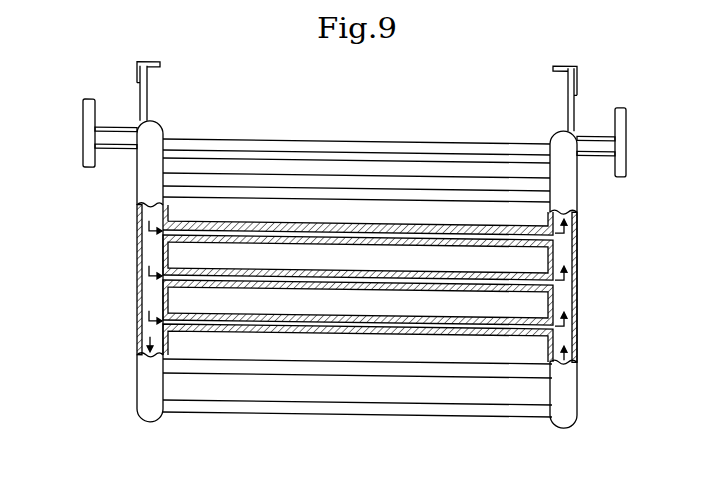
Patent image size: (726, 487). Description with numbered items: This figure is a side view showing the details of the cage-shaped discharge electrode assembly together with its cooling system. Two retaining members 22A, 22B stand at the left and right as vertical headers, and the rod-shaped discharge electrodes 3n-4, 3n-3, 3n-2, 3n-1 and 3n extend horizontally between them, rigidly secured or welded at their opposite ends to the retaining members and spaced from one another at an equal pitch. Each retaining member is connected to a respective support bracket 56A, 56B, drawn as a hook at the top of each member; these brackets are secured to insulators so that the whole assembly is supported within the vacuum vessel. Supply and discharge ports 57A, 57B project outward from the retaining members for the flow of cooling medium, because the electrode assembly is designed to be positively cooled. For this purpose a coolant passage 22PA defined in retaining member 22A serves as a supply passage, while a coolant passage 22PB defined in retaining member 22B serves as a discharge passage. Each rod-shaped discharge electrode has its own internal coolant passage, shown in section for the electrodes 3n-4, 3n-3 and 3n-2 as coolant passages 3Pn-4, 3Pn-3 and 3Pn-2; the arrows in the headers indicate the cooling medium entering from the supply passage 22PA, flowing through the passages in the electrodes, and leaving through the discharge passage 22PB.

The retaining member 22A is at (138, 387).
The retaining member 22B is at (575, 397).
The coolant passage 22PA is at (147, 327).
The coolant passage 22PB is at (570, 329).
The support bracket 56A is at (148, 96).
The support bracket 56B is at (568, 107).
The supply port 57A is at (83, 127).
The discharge port 57B is at (627, 142).
The rod-shaped discharge electrode 3n is at (437, 408).
The rod-shaped discharge electrode 3n-1 is at (440, 369).
The rod-shaped discharge electrode 3n-2 is at (358, 345).
The rod-shaped discharge electrode 3n-3 is at (358, 301).
The rod-shaped discharge electrode 3n-4 is at (358, 257).
The coolant passage 3Pn-2 is at (282, 323).
The coolant passage 3Pn-3 is at (282, 278).
The coolant passage 3Pn-4 is at (275, 236).